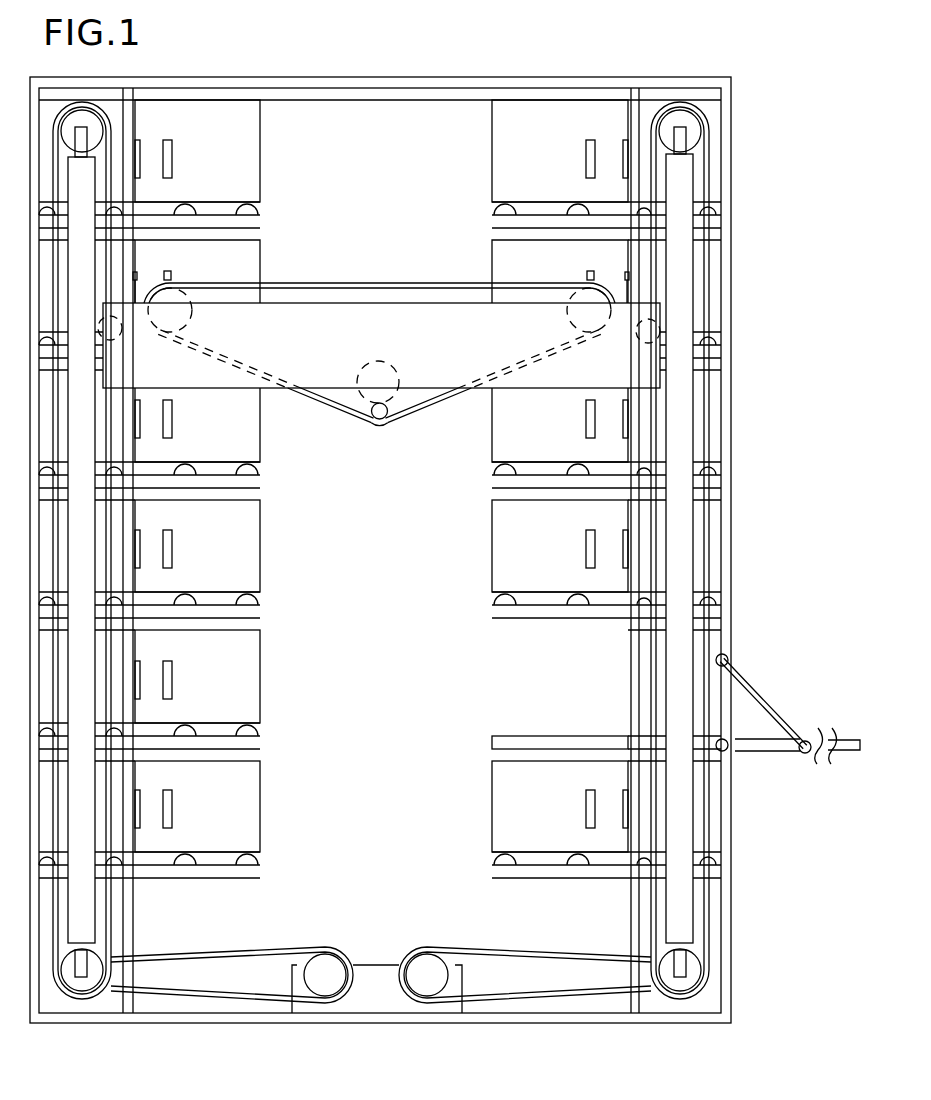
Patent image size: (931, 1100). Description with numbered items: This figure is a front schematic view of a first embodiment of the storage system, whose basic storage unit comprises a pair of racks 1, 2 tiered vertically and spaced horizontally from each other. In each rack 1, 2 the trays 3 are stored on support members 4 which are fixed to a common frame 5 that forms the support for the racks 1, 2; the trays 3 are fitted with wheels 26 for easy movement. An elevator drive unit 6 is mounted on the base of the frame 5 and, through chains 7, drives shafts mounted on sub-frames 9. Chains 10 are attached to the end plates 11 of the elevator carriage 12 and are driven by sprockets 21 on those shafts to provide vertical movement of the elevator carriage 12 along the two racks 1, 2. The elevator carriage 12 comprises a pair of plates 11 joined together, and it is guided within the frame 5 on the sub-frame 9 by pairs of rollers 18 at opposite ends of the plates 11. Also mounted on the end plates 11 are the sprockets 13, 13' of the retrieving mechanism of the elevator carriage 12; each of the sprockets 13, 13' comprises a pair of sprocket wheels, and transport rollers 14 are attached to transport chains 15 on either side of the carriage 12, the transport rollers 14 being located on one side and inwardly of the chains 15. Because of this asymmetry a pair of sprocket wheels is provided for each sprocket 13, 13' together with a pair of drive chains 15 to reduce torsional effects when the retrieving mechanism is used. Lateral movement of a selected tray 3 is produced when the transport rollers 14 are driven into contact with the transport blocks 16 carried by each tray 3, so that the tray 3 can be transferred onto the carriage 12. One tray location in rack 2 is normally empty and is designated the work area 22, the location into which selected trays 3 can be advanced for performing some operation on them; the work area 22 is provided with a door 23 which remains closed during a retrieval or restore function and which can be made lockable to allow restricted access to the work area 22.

The rack 1 is at (283, 212).
The rack 2 is at (472, 213).
The tray 3 is at (381, 476).
The support member 4 is at (260, 600).
The frame 5 is at (130, 896).
The elevator drive unit 6 is at (373, 965).
The chain 7 is at (210, 950).
The sub-frame 9 is at (755, 914).
The chain 10 is at (53, 543).
The end plate 11 is at (381, 345).
The elevator carriage 12 is at (415, 455).
The sprocket 13 is at (397, 376).
The sprocket 13' is at (379, 313).
The transport roller 14 is at (372, 416).
The transport chain 15 is at (331, 283).
The transport block 16 is at (166, 271).
The roller 18 is at (113, 340).
The sprocket 21 is at (82, 988).
The work area 22 is at (514, 685).
The door 23 is at (765, 752).
The wheel 26 is at (250, 733).